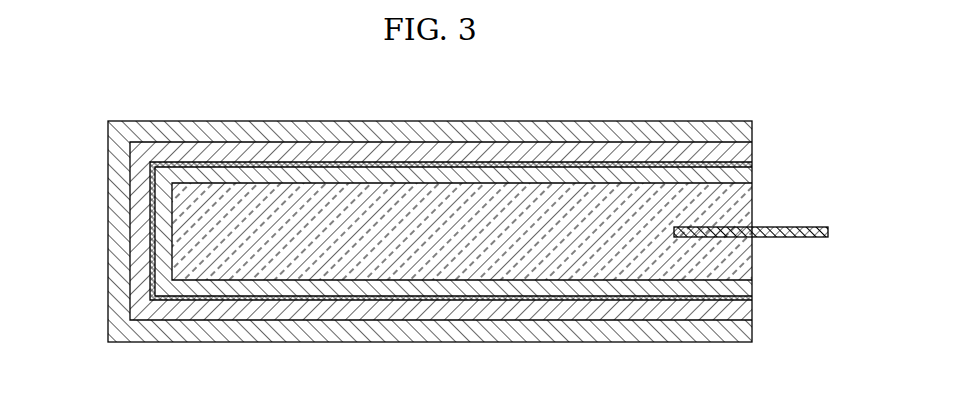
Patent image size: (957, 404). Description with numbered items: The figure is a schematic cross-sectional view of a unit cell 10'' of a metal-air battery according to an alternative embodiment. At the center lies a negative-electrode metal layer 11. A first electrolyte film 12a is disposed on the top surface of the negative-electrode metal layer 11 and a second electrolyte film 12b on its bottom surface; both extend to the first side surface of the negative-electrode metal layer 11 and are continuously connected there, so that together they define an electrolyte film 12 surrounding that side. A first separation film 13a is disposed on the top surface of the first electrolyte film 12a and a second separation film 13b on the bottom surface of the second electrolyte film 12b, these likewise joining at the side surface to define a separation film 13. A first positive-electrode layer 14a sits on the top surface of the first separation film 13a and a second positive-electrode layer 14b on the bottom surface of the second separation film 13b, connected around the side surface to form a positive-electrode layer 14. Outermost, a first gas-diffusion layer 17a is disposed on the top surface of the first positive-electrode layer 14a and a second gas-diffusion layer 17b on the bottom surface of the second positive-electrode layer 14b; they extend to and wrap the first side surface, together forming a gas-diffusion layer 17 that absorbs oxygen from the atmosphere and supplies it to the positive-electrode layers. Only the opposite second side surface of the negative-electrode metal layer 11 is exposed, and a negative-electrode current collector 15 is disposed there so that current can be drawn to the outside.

The unit cell 10'' is at (430, 184).
The negative-electrode metal layer 11 is at (743, 210).
The electrolyte film 12 is at (163, 258).
The first electrolyte film 12a is at (743, 176).
The second electrolyte film 12b is at (743, 288).
The separation film 13 is at (152, 233).
The first separation film 13a is at (745, 167).
The second separation film 13b is at (745, 298).
The positive-electrode layer 14 is at (140, 212).
The first positive-electrode layer 14a is at (743, 151).
The second positive-electrode layer 14b is at (743, 310).
The negative-electrode current collector 15 is at (807, 238).
The gas-diffusion layer 17 is at (119, 190).
The first gas-diffusion layer 17a is at (743, 131).
The second gas-diffusion layer 17b is at (743, 333).